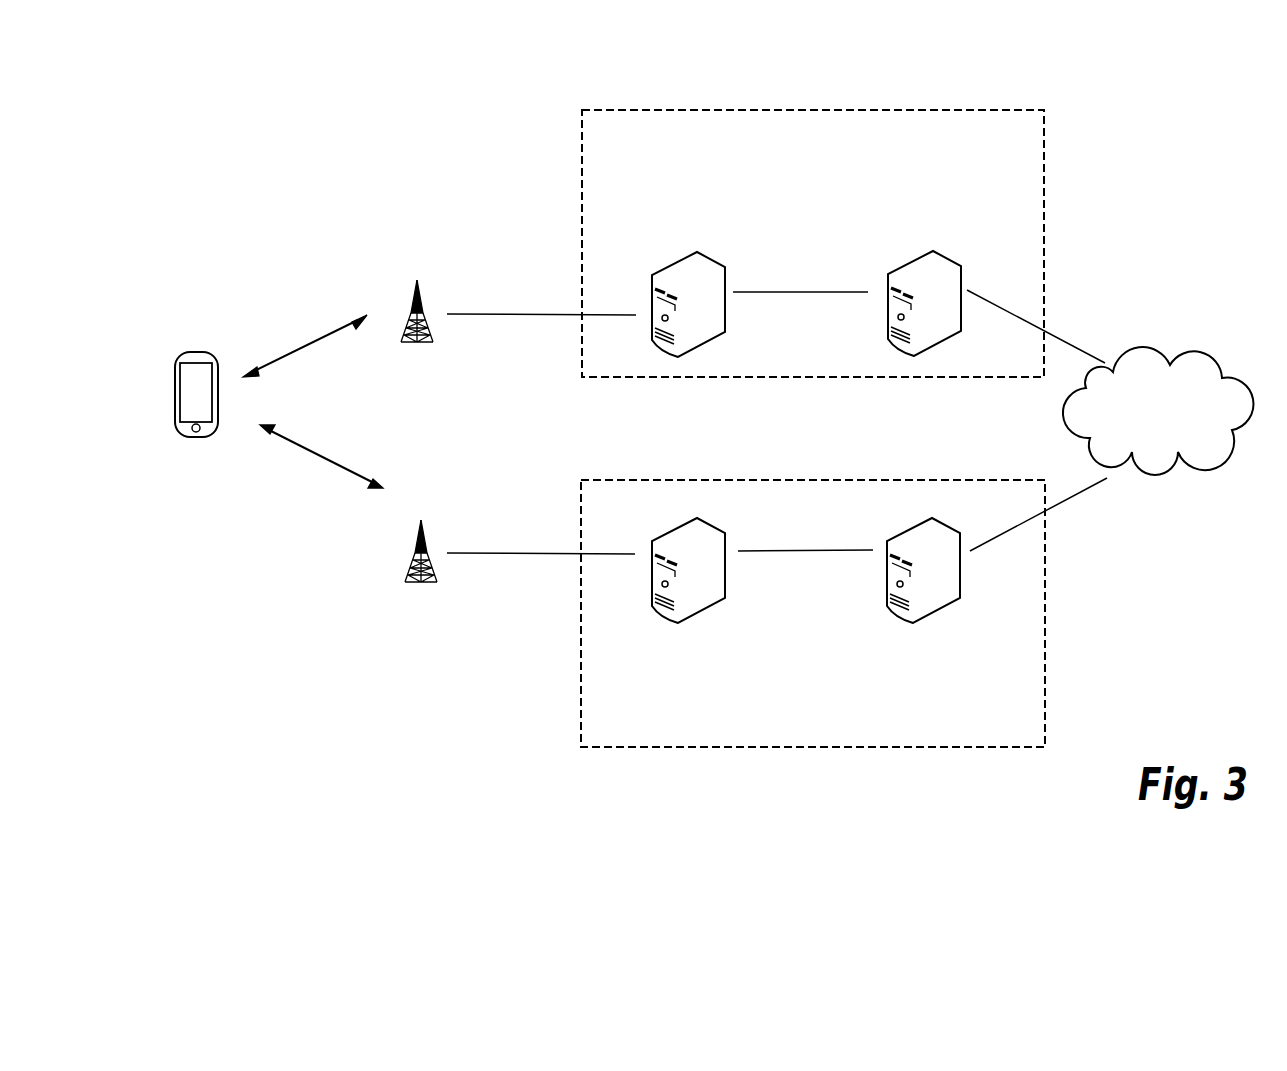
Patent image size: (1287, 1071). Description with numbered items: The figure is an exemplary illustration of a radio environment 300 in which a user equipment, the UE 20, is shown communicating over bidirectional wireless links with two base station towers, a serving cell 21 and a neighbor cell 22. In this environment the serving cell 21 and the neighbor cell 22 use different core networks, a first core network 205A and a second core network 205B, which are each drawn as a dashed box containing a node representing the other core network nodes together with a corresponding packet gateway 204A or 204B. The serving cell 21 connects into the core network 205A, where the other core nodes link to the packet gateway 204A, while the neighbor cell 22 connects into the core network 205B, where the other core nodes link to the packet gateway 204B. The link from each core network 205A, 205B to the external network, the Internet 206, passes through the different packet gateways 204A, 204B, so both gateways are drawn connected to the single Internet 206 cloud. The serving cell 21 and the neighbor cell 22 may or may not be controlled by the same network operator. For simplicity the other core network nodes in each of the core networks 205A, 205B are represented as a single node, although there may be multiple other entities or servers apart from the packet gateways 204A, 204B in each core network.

The radio environment 300 is at (372, 167).
The user equipment (UE) 20 is at (196, 417).
The serving cell 21 is at (420, 296).
The neighbor cell 22 is at (421, 569).
The core network 205A is at (813, 243).
The core network 205B is at (813, 613).
The packet gateway 204A is at (939, 272).
The packet gateway 204B is at (923, 600).
The Internet 206 is at (1158, 411).